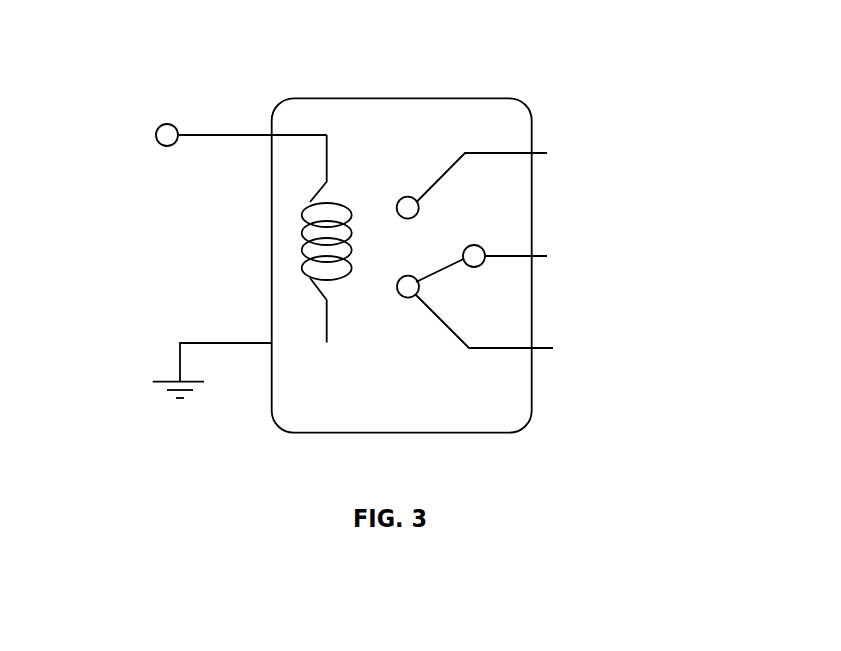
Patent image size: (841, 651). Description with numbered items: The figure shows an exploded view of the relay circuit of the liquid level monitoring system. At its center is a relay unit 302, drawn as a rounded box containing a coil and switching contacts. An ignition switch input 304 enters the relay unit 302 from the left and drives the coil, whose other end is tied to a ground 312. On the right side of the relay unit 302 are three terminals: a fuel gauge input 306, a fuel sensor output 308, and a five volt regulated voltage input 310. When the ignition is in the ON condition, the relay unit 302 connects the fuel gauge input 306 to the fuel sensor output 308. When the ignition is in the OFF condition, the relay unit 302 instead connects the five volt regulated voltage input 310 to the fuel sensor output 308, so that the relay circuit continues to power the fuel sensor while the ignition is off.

The relay unit 302 is at (433, 125).
The ignition switch input 304 is at (226, 135).
The fuel gauge input 306 is at (555, 179).
The fuel sensor output 308 is at (570, 262).
The 5 volt regulated voltage input 310 is at (594, 319).
The ground 312 is at (230, 343).